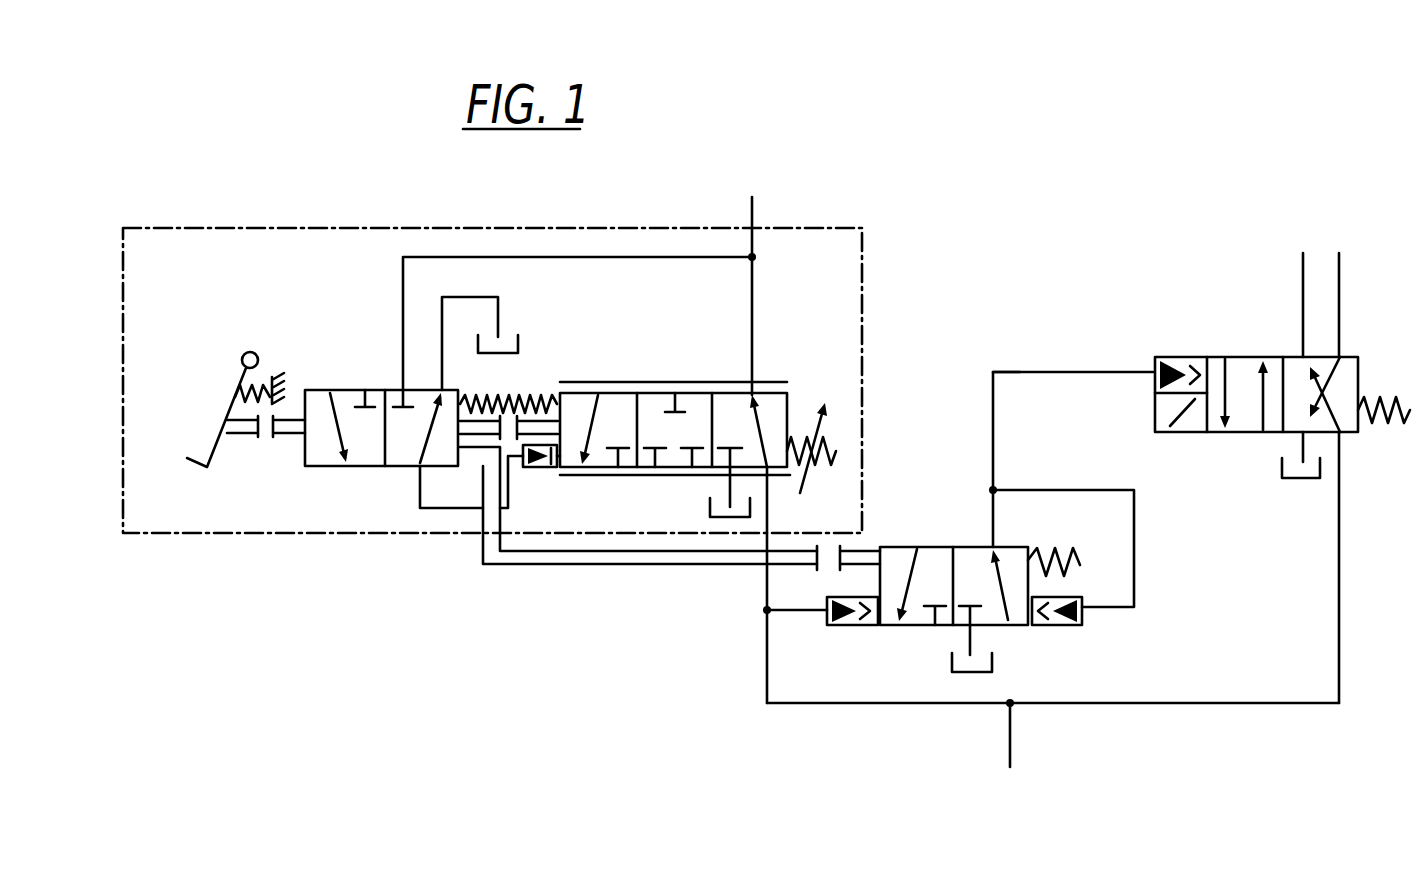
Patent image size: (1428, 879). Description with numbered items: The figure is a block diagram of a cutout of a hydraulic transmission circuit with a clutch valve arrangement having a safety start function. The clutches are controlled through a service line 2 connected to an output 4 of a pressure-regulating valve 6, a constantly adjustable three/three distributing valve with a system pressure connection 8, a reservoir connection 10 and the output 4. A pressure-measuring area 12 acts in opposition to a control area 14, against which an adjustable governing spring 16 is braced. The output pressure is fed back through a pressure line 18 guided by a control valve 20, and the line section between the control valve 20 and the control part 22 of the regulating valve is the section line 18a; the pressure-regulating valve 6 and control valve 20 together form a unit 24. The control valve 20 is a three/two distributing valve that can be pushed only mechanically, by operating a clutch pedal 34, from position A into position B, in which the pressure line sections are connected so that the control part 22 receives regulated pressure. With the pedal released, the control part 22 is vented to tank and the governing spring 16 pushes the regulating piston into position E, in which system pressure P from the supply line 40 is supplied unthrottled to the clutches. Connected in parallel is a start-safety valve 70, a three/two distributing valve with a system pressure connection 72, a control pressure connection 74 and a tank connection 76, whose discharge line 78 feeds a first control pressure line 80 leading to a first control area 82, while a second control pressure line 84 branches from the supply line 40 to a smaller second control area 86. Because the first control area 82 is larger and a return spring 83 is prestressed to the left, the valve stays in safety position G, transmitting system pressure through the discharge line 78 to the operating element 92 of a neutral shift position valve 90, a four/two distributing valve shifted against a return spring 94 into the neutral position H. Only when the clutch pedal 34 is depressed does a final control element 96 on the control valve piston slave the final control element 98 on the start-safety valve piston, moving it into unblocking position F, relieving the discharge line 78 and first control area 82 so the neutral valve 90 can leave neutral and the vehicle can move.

The service line 2 is at (752, 197).
The output 4 is at (755, 362).
The pressure-regulating valve 6 is at (640, 368).
The system pressure connection 8 is at (772, 475).
The reservoir connection 10 is at (728, 473).
The pressure-measuring area 12 is at (545, 397).
The control area 14 is at (788, 407).
The governing spring 16 is at (833, 445).
The pressure line 18 is at (488, 257).
The section line 18a is at (457, 512).
The control valve 20 is at (343, 378).
The control part 22 is at (550, 465).
The unit 24 is at (289, 226).
The clutch pedal 34 is at (215, 440).
The supply line 40 is at (767, 678).
The start-safety valve 70 is at (910, 640).
The system pressure connection 72 is at (1013, 630).
The control pressure connection 74 is at (993, 547).
The tank connection 76 is at (972, 630).
The discharge line 78 is at (1018, 371).
The first control pressure line 80 is at (1136, 547).
The first control area 82 is at (1085, 625).
The return spring 83 is at (1070, 557).
The second control pressure line 84 is at (792, 622).
The second control area 86 is at (868, 628).
The neutral shift position valve 90 is at (1200, 334).
The operating element 92 is at (1197, 365).
The return spring 94 is at (1380, 393).
The final control element 96 is at (493, 560).
The final control element 98 is at (860, 556).